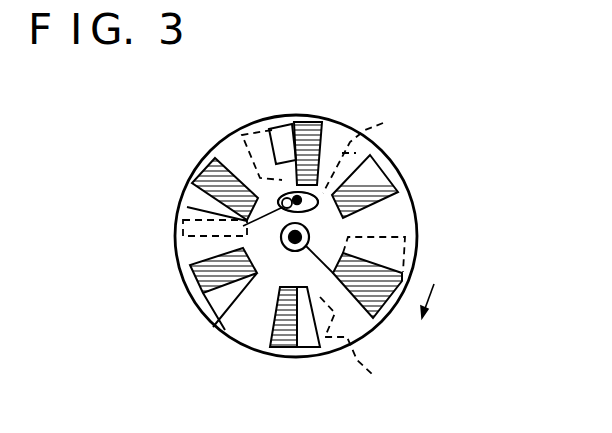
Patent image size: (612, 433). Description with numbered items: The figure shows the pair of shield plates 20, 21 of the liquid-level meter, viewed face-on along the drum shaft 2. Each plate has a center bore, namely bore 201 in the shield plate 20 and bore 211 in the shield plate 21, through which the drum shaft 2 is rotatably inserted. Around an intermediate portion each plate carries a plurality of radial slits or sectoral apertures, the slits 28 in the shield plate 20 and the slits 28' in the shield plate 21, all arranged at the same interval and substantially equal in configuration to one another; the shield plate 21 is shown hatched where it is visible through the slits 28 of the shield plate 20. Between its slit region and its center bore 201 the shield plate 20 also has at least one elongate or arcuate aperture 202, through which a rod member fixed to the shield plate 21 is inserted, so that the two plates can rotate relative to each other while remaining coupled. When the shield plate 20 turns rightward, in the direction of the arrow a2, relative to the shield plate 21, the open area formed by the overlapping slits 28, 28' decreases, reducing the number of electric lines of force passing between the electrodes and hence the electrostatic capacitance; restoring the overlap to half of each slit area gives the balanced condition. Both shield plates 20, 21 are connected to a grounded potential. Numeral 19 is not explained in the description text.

The drum shaft 2 is at (373, 318).
The pointer element 19 is at (192, 182).
The shield plate 20 is at (345, 128).
The bore 201 is at (274, 322).
The elongate or arcuate aperture 202 is at (253, 144).
The shield plate 21 is at (395, 187).
The bore 211 is at (295, 237).
The radial slit 28 is at (316, 205).
The radial slit 28' is at (274, 250).
The arrow a2 is at (478, 311).